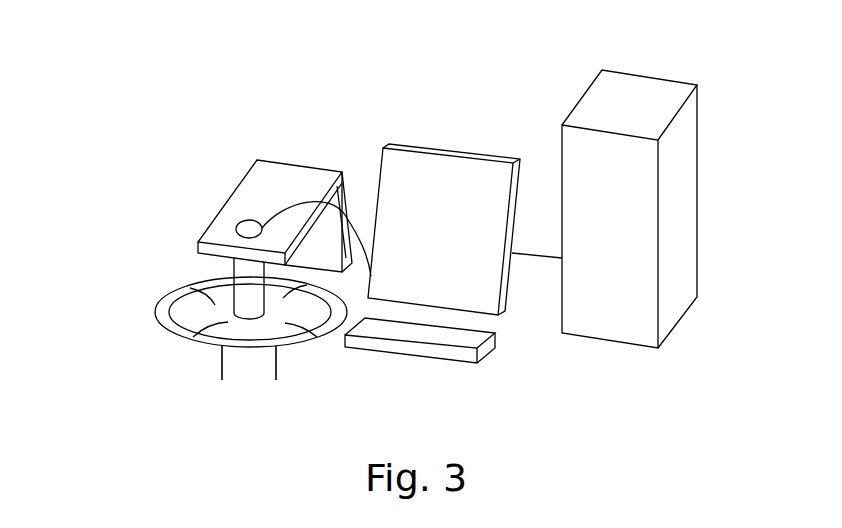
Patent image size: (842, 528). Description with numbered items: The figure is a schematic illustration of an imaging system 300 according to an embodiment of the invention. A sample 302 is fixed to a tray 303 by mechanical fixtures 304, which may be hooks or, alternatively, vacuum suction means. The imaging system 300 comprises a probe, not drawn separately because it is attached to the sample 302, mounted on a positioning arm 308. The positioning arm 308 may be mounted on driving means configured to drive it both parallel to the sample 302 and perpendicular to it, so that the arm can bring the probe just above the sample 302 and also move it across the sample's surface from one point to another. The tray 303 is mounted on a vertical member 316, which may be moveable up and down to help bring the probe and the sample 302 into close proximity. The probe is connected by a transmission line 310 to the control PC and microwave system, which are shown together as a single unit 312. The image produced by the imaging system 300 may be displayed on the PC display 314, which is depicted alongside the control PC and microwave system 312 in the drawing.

The imaging system 300 is at (208, 106).
The sample 302 is at (229, 323).
The tray 303 is at (180, 336).
The mechanical fixtures 304 is at (175, 307).
The positioning arm 308 is at (242, 290).
The transmission line 310 is at (305, 202).
The control PC and microwave system 312 is at (690, 155).
The PC display 314 is at (482, 170).
The vertical member 316 is at (232, 373).